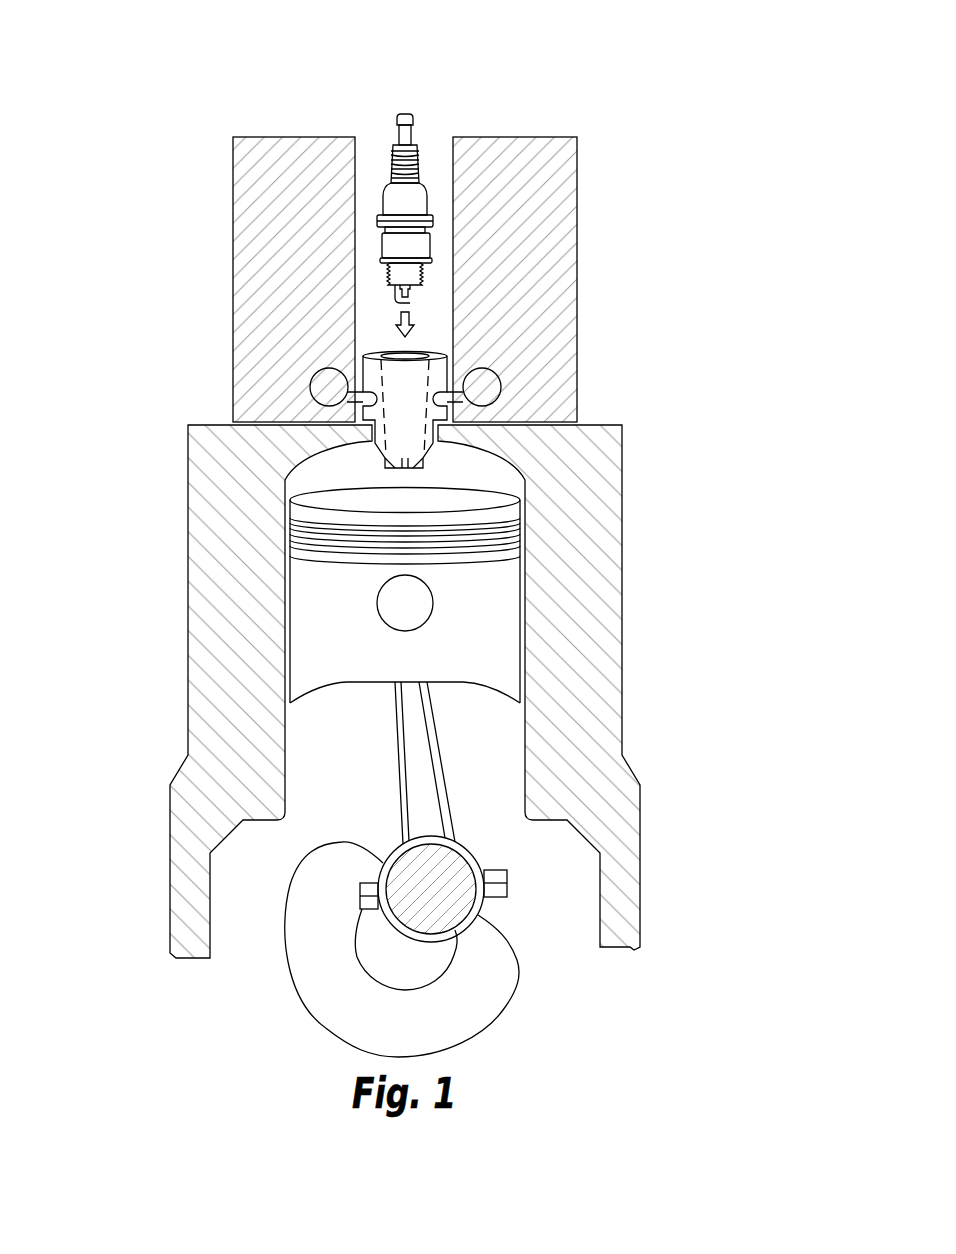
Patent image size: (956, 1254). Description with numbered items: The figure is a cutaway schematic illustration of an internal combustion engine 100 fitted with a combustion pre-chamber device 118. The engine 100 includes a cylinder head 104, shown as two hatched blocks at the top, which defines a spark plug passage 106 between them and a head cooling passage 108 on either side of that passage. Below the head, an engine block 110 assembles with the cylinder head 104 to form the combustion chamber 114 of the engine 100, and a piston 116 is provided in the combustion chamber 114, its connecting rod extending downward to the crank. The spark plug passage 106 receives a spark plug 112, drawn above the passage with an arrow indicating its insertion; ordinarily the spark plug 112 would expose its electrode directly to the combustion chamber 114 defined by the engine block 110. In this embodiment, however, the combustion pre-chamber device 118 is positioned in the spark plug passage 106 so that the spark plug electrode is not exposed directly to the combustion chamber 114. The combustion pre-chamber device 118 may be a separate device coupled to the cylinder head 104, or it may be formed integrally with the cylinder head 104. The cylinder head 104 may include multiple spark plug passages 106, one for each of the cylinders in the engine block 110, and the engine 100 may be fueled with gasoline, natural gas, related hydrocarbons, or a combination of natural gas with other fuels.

The internal combustion engine 100 is at (125, 96).
The cylinder head 104 is at (538, 153).
The spark plug passage 106 is at (370, 128).
The head cooling passage 108 is at (326, 383).
The engine block 110 is at (220, 570).
The spark plug 112 is at (417, 145).
The combustion chamber 114 is at (300, 472).
The piston 116 is at (307, 640).
The combustion pre-chamber device 118 is at (372, 367).